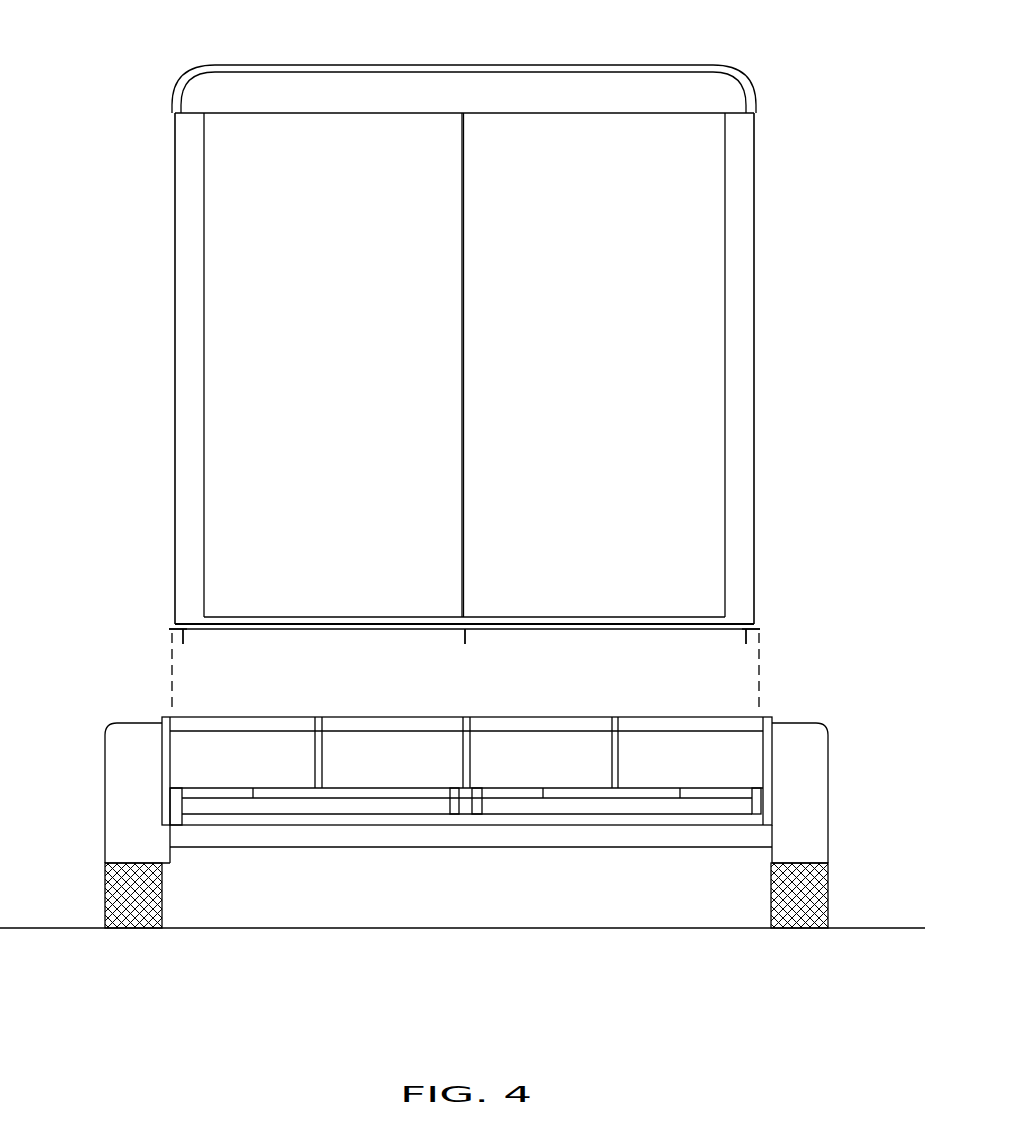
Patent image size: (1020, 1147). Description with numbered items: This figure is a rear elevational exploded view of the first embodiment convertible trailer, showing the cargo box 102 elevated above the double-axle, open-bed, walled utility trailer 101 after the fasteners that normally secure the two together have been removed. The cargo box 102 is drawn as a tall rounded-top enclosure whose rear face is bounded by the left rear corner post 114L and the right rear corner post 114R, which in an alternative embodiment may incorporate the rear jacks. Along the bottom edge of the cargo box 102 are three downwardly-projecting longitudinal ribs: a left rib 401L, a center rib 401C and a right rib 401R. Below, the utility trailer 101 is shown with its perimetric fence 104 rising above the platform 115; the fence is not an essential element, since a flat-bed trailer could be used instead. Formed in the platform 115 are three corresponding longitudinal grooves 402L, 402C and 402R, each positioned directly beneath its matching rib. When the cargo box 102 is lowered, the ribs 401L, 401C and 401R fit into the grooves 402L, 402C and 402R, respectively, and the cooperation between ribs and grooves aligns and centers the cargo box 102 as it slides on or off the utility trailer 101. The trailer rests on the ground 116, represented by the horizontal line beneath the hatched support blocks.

The utility trailer 101 is at (147, 702).
The cargo box 102 is at (422, 92).
The perimetric fence 104 is at (410, 717).
The rear corner post 114L is at (187, 361).
The rear corner post 114R is at (740, 357).
The platform 115 is at (573, 805).
The ground 116 is at (424, 924).
The left rib 401L is at (186, 641).
The center rib 401C is at (468, 641).
The right rib 401R is at (744, 641).
The longitudinal groove 402L is at (190, 784).
The longitudinal groove 402C is at (470, 784).
The longitudinal groove 402R is at (742, 782).